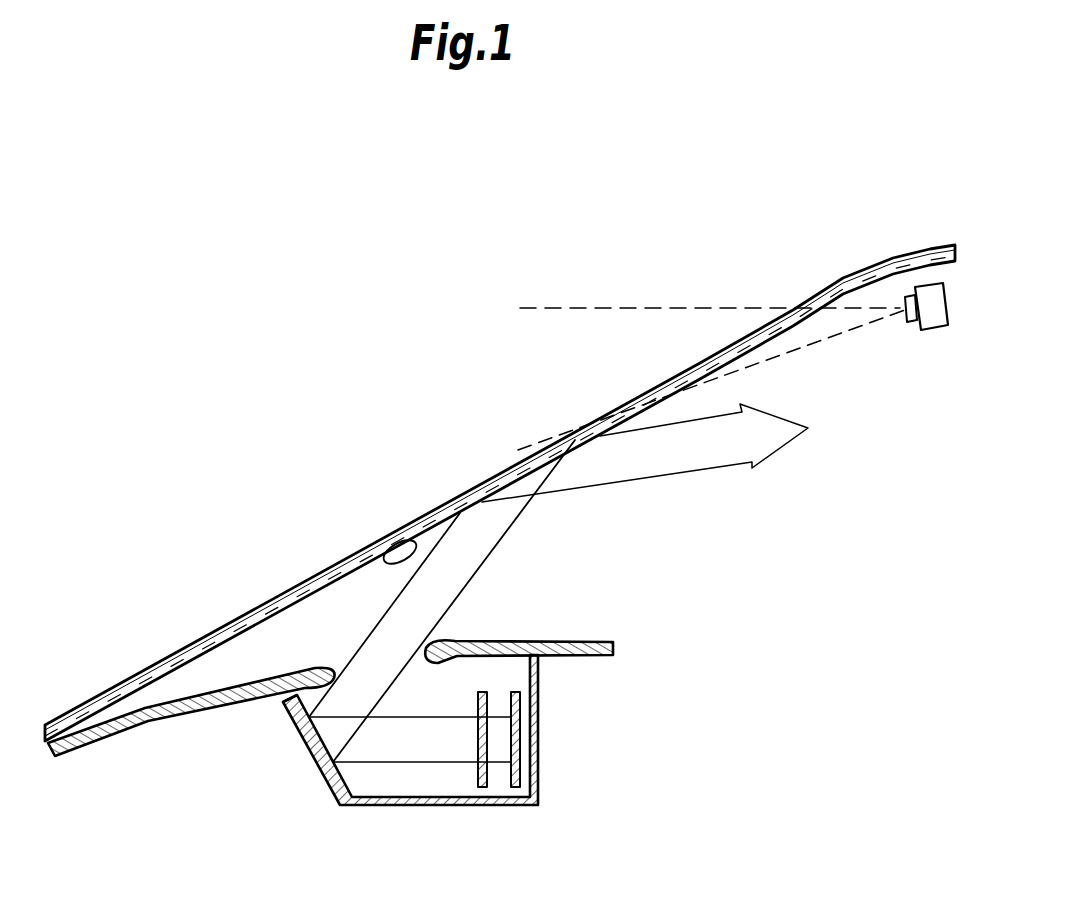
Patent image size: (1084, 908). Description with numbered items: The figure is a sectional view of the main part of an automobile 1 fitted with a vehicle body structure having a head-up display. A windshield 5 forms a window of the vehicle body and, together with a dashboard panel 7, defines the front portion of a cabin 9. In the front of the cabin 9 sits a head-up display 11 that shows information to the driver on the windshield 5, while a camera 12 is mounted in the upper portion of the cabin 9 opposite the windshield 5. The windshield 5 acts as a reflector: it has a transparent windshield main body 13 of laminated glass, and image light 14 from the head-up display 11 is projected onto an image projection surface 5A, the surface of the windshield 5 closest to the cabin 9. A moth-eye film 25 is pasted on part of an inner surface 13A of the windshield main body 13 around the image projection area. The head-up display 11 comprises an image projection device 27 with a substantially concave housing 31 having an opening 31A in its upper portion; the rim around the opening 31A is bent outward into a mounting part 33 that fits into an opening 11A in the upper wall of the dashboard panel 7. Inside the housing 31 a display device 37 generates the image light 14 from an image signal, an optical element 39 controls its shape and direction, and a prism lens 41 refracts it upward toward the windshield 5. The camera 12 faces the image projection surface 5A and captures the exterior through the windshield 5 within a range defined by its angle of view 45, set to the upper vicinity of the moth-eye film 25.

The automobile 1 is at (284, 370).
The windshield 5 is at (218, 626).
The image projection surface 5A is at (642, 423).
The dashboard panel 7 is at (578, 641).
The cabin 9 is at (630, 531).
The head-up display 11 is at (580, 585).
The opening 11A is at (320, 670).
The camera 12 is at (935, 331).
The windshield main body 13 is at (340, 566).
The inner surface 13A is at (378, 543).
The image light 14 is at (470, 580).
The moth-eye film 25 is at (617, 428).
The image projection device 27 is at (418, 772).
The housing 31 is at (437, 806).
The opening 31A is at (333, 670).
The mounting part 33 is at (283, 674).
The display device 37 is at (520, 778).
The optical element 39 is at (478, 693).
The prism lens 41 is at (283, 707).
The angle of view 45 is at (637, 305).